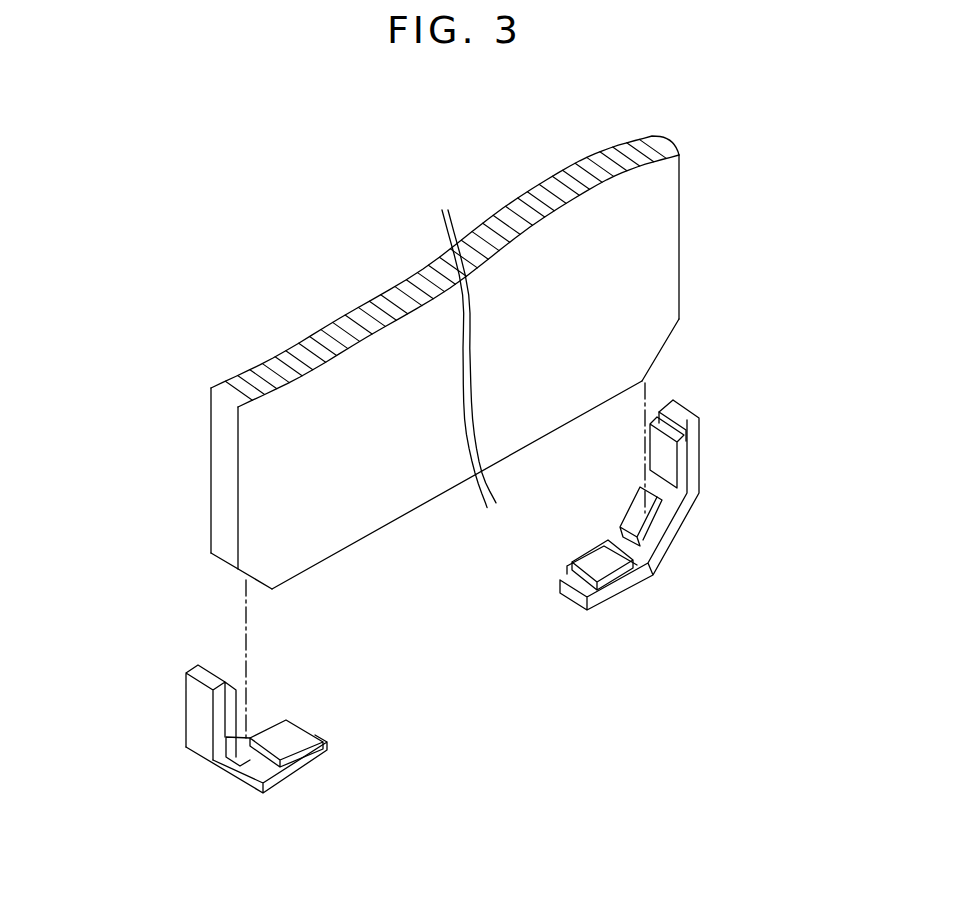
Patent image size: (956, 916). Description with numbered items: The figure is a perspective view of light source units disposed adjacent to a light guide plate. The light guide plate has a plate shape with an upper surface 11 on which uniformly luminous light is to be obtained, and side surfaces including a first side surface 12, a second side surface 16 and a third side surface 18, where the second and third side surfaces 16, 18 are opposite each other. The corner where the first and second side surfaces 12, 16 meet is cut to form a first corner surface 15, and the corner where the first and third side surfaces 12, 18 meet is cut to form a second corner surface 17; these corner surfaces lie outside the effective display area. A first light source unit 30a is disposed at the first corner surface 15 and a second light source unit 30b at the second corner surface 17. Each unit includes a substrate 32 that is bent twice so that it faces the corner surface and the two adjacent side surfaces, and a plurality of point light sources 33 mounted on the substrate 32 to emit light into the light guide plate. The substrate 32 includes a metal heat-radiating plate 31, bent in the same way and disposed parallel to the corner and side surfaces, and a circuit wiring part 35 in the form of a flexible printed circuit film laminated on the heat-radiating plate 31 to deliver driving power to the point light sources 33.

The upper surface 11 is at (451, 374).
The first side surface 12 is at (402, 520).
The first corner surface 15 is at (229, 565).
The second side surface 16 is at (211, 469).
The second corner surface 17 is at (658, 353).
The third side surface 18 is at (679, 237).
The first light source unit 30a is at (180, 670).
The second light source unit 30b is at (709, 505).
The heat-radiating plate 31 is at (662, 557).
The substrate 32 is at (686, 502).
The point light sources 33 is at (657, 512).
The circuit wiring part 35 is at (663, 538).